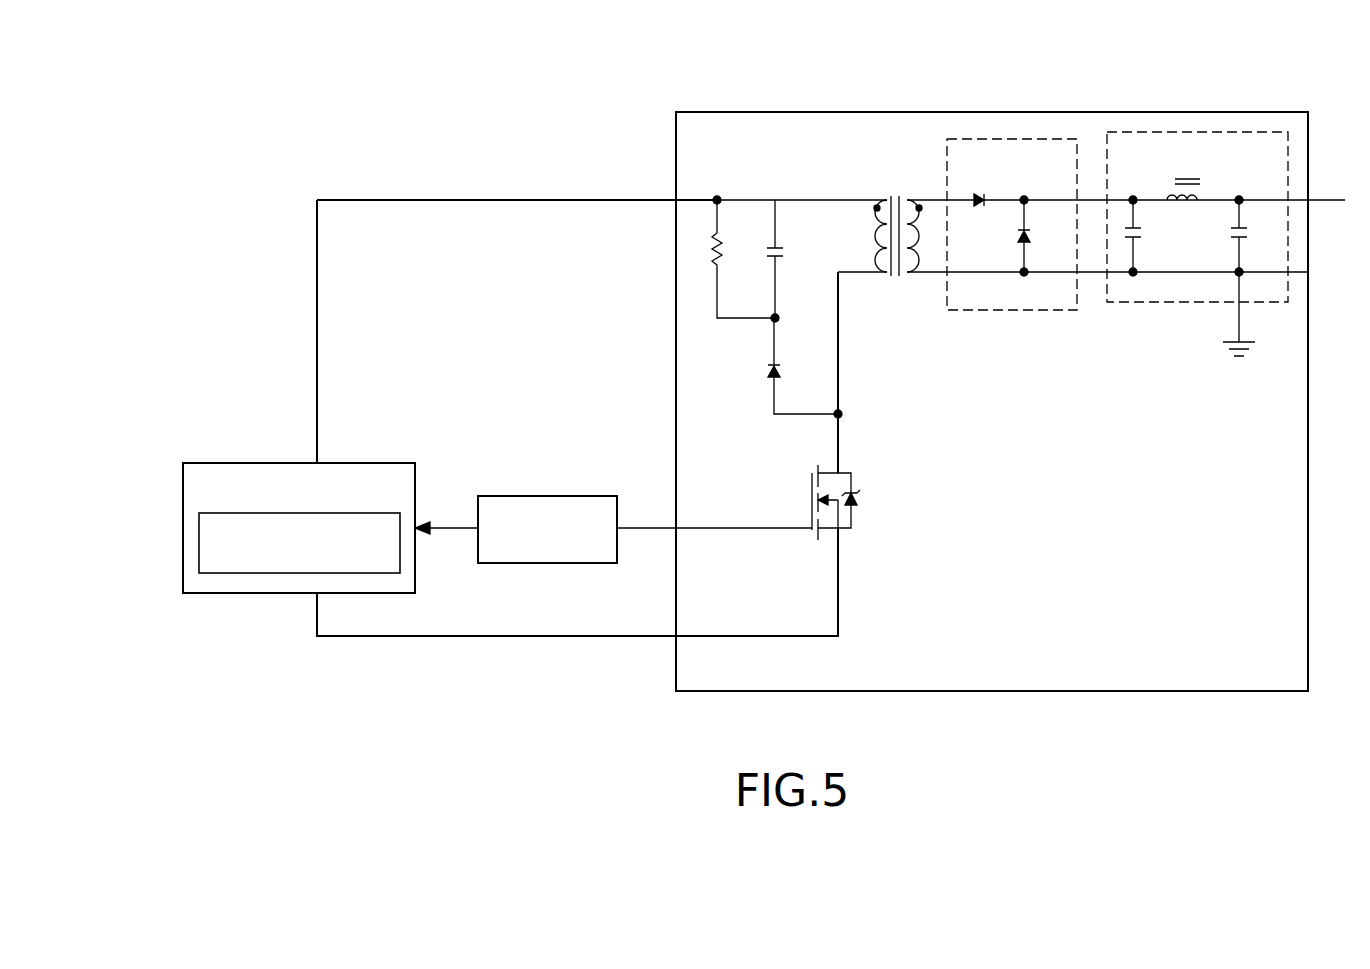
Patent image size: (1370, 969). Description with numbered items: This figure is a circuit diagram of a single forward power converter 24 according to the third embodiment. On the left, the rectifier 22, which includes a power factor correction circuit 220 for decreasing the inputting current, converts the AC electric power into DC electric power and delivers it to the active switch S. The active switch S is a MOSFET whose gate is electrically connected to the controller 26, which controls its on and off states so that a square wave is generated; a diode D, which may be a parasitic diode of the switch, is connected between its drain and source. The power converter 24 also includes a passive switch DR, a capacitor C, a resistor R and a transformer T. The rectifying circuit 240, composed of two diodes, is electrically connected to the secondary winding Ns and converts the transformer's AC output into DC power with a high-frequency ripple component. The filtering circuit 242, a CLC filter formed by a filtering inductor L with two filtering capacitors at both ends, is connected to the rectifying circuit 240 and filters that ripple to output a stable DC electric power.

The rectifier 22 is at (222, 483).
The power factor correction circuit 220 is at (243, 566).
The power converter 24 is at (853, 133).
The rectifying circuit 240 is at (1030, 153).
The filtering circuit 242 is at (1153, 147).
The controller 26 is at (548, 505).